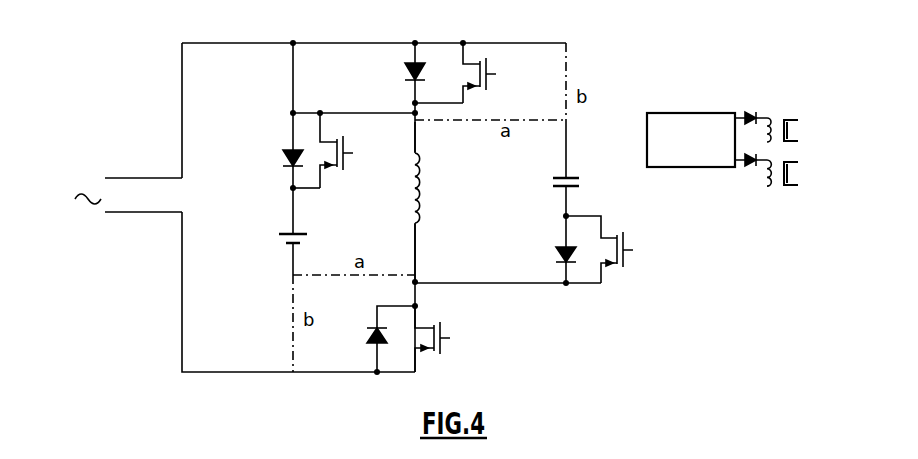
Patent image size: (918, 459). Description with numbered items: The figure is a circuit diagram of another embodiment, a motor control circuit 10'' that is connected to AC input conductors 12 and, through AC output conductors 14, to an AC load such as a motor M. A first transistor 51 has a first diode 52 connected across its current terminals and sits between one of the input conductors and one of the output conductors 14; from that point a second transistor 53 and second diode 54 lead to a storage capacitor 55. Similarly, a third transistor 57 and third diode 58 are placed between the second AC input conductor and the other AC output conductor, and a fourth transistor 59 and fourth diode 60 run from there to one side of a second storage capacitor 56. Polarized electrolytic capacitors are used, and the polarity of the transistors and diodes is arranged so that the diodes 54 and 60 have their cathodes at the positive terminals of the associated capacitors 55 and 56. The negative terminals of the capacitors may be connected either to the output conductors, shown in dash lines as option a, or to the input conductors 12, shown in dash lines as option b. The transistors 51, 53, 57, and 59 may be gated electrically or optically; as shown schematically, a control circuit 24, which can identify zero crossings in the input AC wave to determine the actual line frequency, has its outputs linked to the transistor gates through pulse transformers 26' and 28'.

The motor control circuit 10'' is at (391, 191).
The AC input conductors 12 is at (158, 178).
The AC output conductors 14 is at (418, 131).
The control circuit 24 is at (688, 113).
The pulse transformer 26' is at (766, 111).
The opto-coupler / signal output 28' is at (776, 190).
The first transistor 51 is at (490, 66).
The diode 52 is at (406, 74).
The second transistor 53 is at (346, 143).
The second diode 54 is at (285, 164).
The storage capacitor 55 is at (280, 238).
The second storage capacitor 56 is at (580, 185).
The third transistor 57 is at (443, 334).
The third diode 58 is at (372, 328).
The fourth transistor 59 is at (626, 241).
The fourth diode 60 is at (562, 247).
The motor M is at (422, 173).